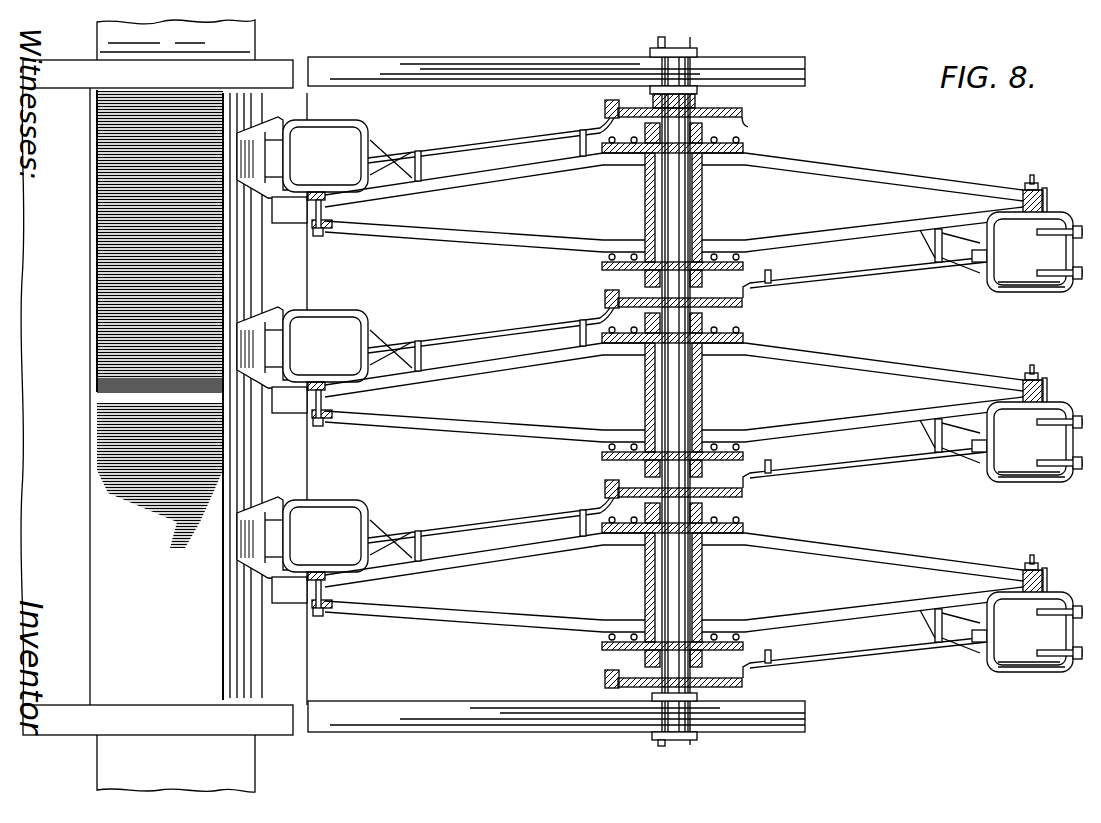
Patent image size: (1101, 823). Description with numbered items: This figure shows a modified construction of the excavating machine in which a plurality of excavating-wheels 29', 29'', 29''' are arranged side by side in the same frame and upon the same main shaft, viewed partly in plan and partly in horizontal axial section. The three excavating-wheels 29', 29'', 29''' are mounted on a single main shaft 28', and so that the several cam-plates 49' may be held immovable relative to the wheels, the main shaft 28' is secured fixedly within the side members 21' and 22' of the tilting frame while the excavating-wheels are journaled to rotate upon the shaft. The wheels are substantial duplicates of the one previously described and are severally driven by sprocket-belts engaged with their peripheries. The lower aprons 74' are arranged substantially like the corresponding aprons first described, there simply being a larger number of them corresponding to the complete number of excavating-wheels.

The side member of the tilting frame 21' is at (556, 56).
The side member of the tilting frame 22' is at (556, 738).
The main shaft 28' is at (691, 391).
The excavating-wheel 29' is at (659, 207).
The excavating-wheel 29'' is at (659, 397).
The excavating-wheel 29''' is at (659, 587).
The cam-plate 49' is at (698, 394).
The lower apron 74' is at (297, 399).